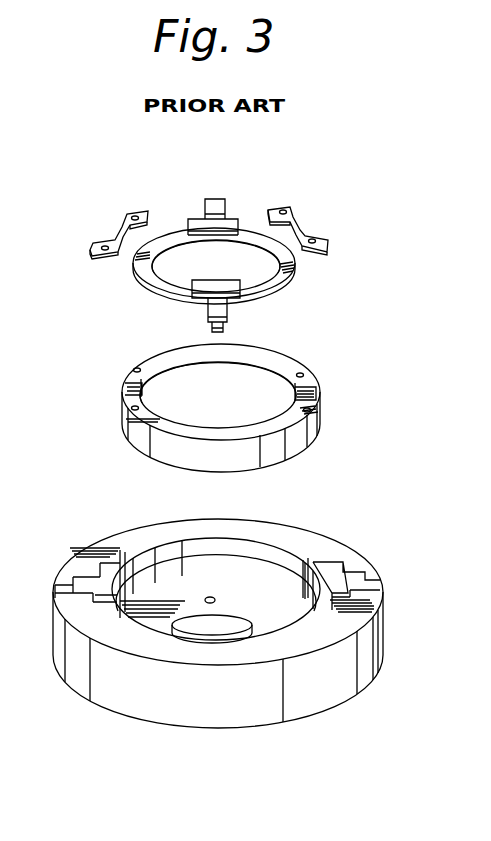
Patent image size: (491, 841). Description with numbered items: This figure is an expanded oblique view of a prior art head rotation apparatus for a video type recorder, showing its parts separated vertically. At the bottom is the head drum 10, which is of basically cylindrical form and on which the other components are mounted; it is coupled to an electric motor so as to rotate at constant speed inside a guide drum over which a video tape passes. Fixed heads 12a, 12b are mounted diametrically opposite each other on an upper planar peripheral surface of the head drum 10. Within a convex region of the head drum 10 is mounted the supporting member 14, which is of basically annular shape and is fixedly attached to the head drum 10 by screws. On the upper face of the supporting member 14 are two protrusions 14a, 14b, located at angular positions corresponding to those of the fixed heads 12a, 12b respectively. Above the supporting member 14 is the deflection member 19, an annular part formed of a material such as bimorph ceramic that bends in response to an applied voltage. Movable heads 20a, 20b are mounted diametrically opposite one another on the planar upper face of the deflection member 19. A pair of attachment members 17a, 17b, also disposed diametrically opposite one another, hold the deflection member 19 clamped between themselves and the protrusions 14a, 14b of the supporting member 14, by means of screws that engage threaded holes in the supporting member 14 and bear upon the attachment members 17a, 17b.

The head drum 10 is at (312, 708).
The fixed head 12a is at (105, 567).
The fixed head 12b is at (352, 562).
The supporting member 14 is at (317, 435).
The protrusion 14a is at (127, 385).
The protrusion 14b is at (313, 385).
The attachment member 17a is at (120, 218).
The attachment member 17b is at (307, 227).
The deflection member 19 is at (292, 263).
The movable head 20a is at (225, 310).
The movable head 20b is at (218, 200).